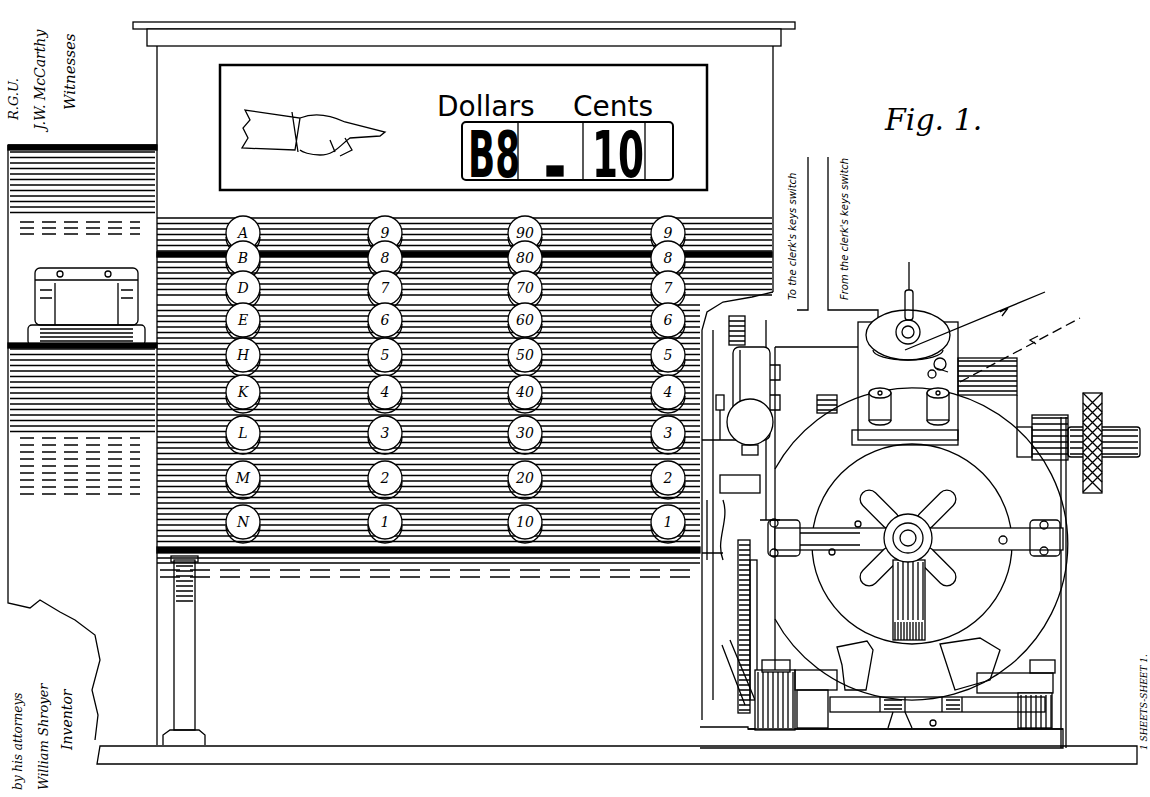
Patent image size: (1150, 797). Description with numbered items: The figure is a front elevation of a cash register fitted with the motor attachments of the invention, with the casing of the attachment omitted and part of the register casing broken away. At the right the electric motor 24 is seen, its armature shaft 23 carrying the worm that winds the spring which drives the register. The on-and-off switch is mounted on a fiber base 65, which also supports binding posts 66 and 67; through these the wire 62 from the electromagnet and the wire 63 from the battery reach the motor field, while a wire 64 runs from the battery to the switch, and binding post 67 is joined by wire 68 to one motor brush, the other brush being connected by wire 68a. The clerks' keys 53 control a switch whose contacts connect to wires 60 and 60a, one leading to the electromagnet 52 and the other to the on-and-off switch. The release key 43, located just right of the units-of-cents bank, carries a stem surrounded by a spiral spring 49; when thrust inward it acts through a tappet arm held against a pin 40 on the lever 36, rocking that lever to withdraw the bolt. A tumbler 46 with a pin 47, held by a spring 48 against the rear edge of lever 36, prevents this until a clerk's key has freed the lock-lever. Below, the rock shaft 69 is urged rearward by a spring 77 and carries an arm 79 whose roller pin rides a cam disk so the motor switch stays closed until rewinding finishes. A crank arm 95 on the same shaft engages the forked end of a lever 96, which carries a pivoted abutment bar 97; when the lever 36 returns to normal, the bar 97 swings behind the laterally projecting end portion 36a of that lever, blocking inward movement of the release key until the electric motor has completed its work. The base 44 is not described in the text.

The armature shaft 23 is at (908, 515).
The electric motor 24 is at (921, 544).
The lever 36 is at (772, 478).
The laterally projecting end portion 36a is at (780, 500).
The pin 40 is at (726, 432).
The release key 43 is at (750, 427).
The base 44 is at (978, 745).
The tumbler 46 is at (714, 540).
The pin 47 is at (1090, 493).
The spring 48 is at (1100, 425).
The spiral spring 49 is at (740, 474).
The electromagnet 52 is at (762, 386).
The clerks' keys 53 is at (262, 392).
The wire 60 is at (806, 304).
The wire 60a is at (858, 318).
The wire 62 is at (886, 383).
The wire 63 is at (1010, 335).
The wire 64 is at (918, 312).
The fiber base 65 is at (922, 373).
The binding post 66 is at (868, 420).
The binding post 67 is at (945, 422).
The wire 68 is at (900, 492).
The wire 68a is at (1010, 634).
The rock shaft 69 is at (712, 686).
The spring 77 is at (898, 716).
The arm 79 is at (895, 698).
The crank arm 95 is at (752, 702).
The lever 96 is at (745, 622).
The abutment bar 97 is at (748, 592).